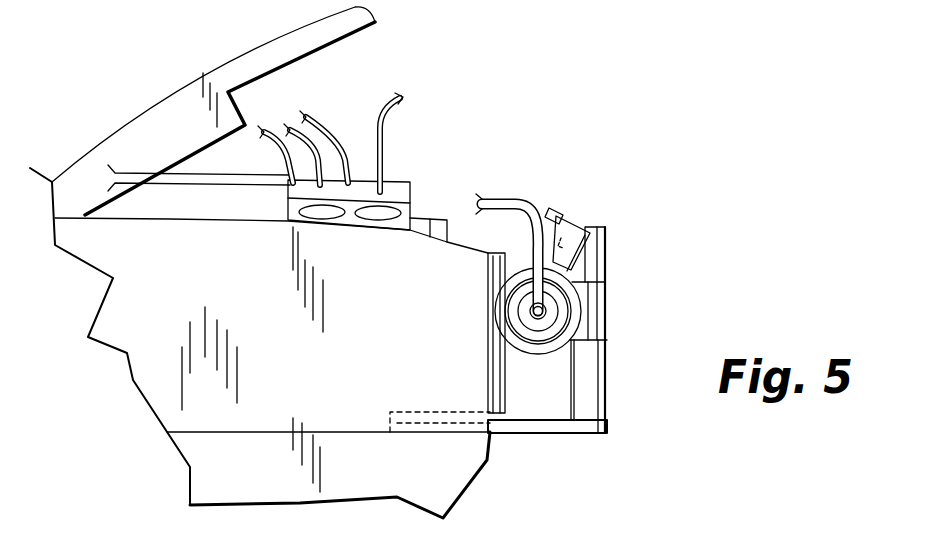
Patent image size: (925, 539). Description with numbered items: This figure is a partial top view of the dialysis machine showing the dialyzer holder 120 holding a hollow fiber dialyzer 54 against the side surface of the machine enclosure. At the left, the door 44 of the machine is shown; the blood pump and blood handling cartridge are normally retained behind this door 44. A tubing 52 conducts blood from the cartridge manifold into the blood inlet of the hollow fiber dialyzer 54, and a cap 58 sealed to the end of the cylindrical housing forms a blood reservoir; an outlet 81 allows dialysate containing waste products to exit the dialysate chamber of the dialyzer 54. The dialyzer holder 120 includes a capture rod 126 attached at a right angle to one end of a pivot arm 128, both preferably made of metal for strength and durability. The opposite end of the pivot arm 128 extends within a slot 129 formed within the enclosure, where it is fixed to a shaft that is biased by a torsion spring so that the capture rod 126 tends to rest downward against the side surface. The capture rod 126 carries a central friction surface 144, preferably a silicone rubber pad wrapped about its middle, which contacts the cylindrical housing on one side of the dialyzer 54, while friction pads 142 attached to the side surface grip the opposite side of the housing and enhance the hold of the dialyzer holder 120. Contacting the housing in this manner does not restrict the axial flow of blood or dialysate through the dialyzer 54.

The door 44 is at (173, 102).
The tubing 52 is at (496, 197).
The outlet 81 is at (567, 210).
The capture rod 126 is at (610, 214).
The central friction surface 144 is at (600, 303).
The caps 58 is at (497, 327).
The friction pads 142 is at (505, 379).
The slot 129 is at (433, 412).
The pivot arm 128 is at (513, 433).
The hollow fiber dialyzer 54 is at (535, 389).
The dialyzer holder 120 is at (575, 326).